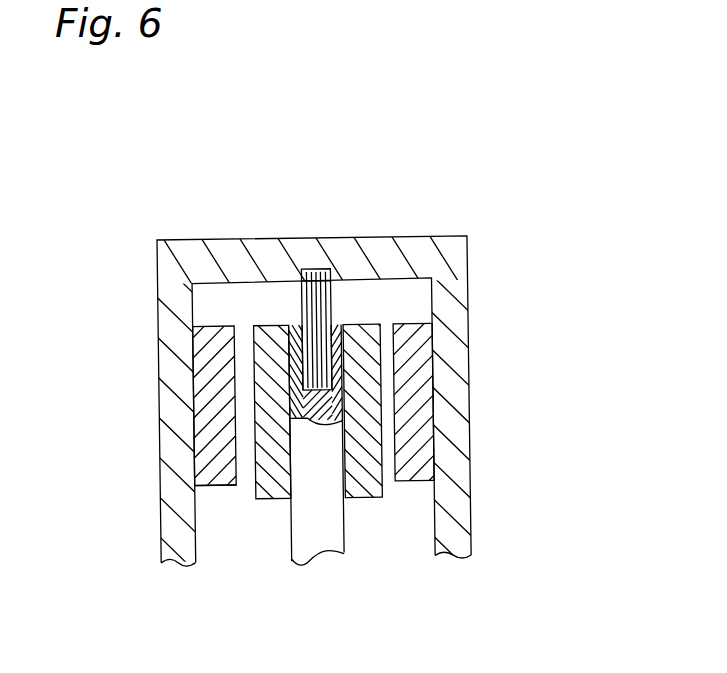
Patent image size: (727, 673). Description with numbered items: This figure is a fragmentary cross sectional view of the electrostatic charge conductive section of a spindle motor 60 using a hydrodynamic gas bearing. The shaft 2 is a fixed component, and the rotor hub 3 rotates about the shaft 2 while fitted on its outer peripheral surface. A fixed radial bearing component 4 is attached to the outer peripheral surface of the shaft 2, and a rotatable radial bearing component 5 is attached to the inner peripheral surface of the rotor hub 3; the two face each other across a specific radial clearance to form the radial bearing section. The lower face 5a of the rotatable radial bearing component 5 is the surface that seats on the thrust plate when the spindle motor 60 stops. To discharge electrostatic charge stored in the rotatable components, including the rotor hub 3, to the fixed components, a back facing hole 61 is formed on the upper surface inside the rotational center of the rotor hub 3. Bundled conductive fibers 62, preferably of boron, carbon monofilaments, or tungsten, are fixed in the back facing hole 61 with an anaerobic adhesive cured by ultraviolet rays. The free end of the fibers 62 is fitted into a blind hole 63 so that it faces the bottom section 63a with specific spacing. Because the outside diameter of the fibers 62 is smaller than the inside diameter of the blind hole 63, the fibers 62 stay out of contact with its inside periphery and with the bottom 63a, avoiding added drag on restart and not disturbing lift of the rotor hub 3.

The shaft 2 is at (327, 538).
The rotor hub 3 is at (182, 262).
The radial bearing component 4 is at (164, 446).
The rotatable radial bearing component 5 is at (251, 444).
The lower face of the rotatable radial bearing component 5a is at (153, 525).
The spindle motor 60 is at (363, 396).
The back facing hole 61 is at (286, 213).
The conductive fibers 62 is at (333, 261).
The blind hole 63 is at (389, 490).
The bottom section of the blind hole 63a is at (342, 382).